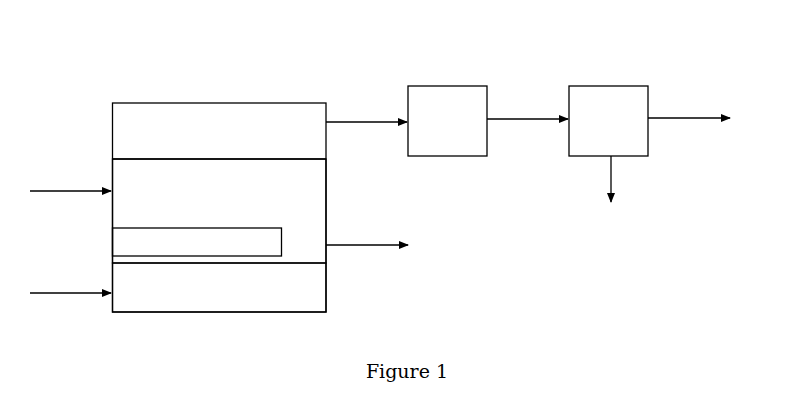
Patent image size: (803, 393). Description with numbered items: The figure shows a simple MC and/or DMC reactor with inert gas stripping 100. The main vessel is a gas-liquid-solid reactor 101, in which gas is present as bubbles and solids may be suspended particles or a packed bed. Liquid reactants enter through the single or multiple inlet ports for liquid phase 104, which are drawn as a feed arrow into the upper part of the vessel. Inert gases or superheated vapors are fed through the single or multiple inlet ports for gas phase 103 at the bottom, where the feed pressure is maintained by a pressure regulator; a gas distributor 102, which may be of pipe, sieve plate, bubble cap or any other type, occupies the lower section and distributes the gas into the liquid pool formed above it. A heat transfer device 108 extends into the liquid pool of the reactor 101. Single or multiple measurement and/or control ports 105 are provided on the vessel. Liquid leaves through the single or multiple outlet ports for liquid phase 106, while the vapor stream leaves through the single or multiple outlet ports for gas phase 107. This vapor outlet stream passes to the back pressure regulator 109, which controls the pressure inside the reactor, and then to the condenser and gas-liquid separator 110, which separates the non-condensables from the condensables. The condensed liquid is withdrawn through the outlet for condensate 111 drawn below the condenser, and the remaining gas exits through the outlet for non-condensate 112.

The MC and/or DMC reactor with inert gas stripping 100 is at (192, 100).
The gas-liquid-solid reactor 101 is at (220, 211).
The gas distributor 102 is at (220, 287).
The inlet ports for gas phase 103 is at (70, 315).
The inlet ports for liquid phase 104 is at (70, 172).
The measurement and/or control ports 105 is at (272, 179).
The outlet ports for liquid phase 106 is at (367, 231).
The outlet ports for gas phase 107 is at (366, 109).
The heat transfer device 108 is at (112, 243).
The back pressure regulator 109 is at (427, 84).
The condenser and gas-liquid separator 110 is at (588, 84).
The outlet for condensate 111 is at (609, 195).
The outlet for non-condensate 112 is at (711, 118).